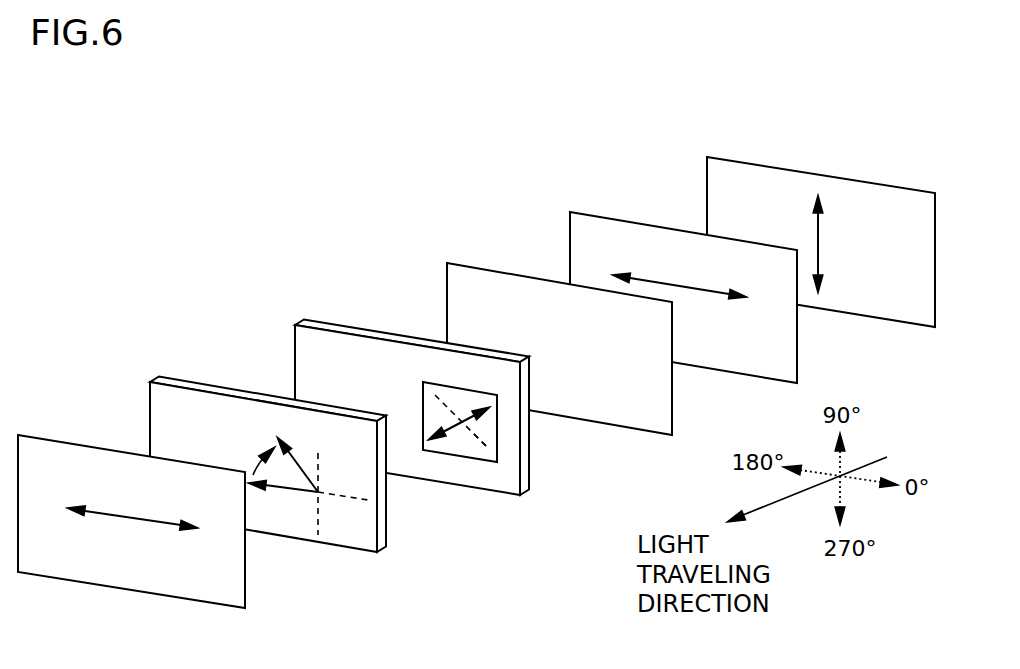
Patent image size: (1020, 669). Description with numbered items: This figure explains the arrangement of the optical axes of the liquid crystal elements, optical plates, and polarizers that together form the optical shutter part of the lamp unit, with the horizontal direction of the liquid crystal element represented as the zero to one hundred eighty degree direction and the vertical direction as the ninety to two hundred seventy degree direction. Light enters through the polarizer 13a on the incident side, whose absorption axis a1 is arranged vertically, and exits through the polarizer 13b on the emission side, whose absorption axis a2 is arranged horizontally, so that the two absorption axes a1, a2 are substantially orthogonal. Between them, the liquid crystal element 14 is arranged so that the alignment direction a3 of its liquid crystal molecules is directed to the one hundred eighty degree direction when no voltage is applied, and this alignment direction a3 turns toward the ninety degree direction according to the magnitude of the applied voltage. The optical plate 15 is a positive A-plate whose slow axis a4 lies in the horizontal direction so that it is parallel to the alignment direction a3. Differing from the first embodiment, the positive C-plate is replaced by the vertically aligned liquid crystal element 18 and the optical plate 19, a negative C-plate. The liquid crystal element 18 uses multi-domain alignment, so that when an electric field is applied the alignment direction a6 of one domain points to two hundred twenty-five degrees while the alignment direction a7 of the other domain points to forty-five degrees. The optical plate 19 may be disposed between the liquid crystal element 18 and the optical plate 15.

The polarizer 13a is at (740, 158).
The polarizer 13b is at (48, 437).
The liquid crystal element 14 is at (175, 378).
The optical plate 15 is at (598, 213).
The liquid crystal element 18 is at (322, 318).
The optical plate 19 is at (475, 263).
The absorption axis a1 is at (832, 244).
The absorption axis a2 is at (132, 509).
The alignment direction a3 is at (308, 486).
The slow axis a4 is at (679, 278).
The alignment direction a6 is at (453, 427).
The alignment direction a7 is at (472, 413).